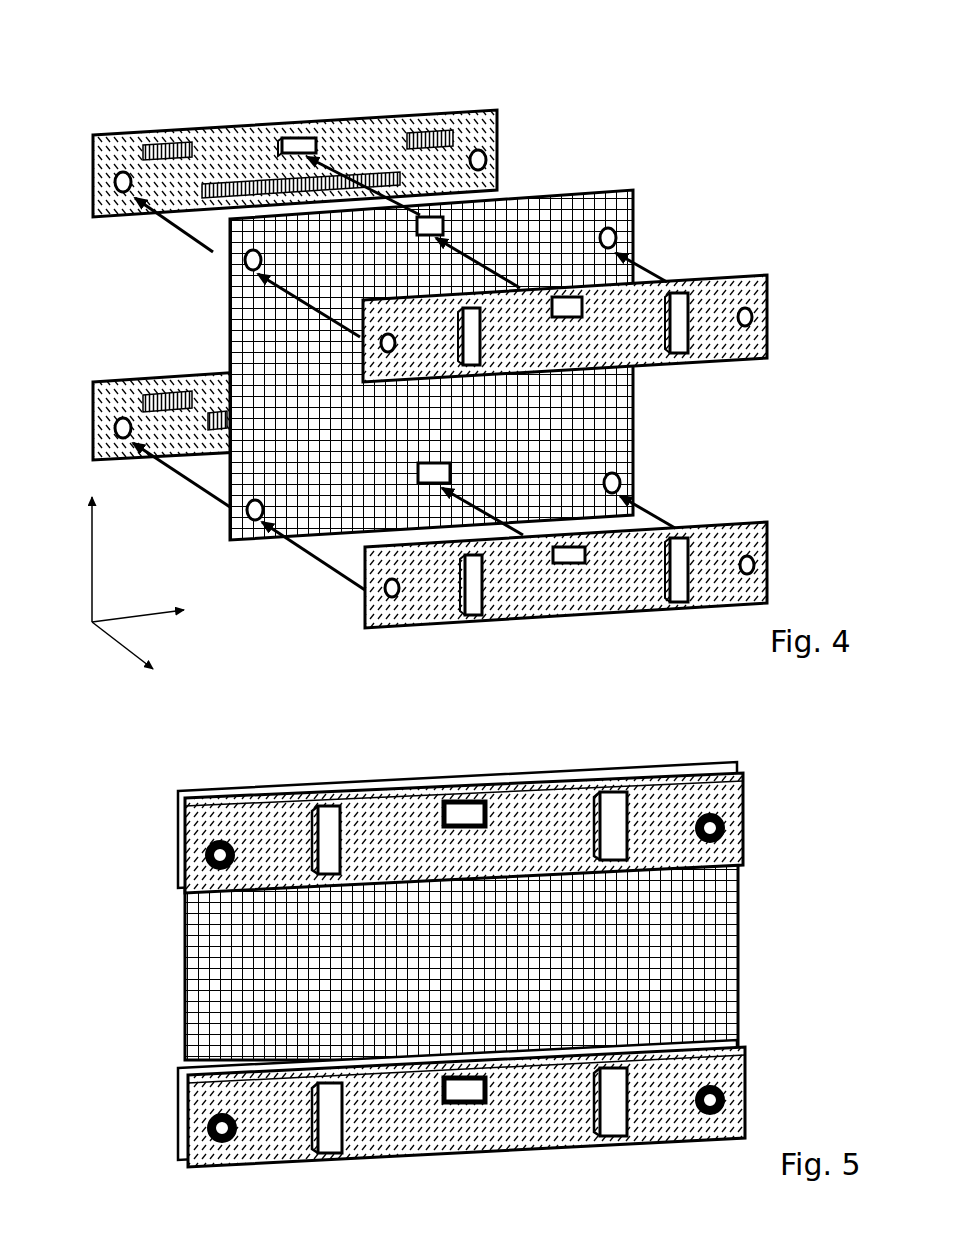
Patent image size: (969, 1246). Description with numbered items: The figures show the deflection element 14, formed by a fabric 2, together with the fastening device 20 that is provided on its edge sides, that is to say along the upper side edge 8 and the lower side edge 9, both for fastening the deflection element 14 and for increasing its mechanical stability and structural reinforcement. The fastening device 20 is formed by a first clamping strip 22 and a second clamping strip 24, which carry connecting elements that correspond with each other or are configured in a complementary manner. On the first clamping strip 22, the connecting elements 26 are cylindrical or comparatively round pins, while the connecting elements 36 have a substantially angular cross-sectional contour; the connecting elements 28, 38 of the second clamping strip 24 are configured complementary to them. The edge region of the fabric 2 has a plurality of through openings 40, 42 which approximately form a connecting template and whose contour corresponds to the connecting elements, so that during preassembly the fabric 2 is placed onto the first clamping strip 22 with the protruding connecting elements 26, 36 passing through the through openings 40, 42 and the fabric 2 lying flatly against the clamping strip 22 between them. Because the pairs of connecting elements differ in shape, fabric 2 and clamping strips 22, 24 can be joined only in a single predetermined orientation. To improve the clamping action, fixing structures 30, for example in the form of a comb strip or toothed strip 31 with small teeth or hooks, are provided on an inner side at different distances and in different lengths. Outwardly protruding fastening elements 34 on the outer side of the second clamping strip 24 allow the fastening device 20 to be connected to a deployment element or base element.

In FIG. 4, the fabric 2 is at (464, 323).
In FIG. 5, the fabric 2 is at (722, 950).
In FIG. 4, the upper side edge 8 is at (431, 338).
In FIG. 4, the lower side edge 9 is at (345, 520).
In FIG. 4, the deflection element 14 is at (270, 76).
In FIG. 5, the deflection element 14 is at (313, 734).
In FIG. 5, the fastening device 20 is at (170, 866).
In FIG. 4, the first clamping strip 22 is at (340, 277).
In FIG. 4, the second clamping strip 24 is at (609, 434).
In FIG. 5, the second clamping strip 24 is at (504, 940).
In FIG. 4, the connecting element 26 is at (121, 170).
In FIG. 4, the connecting element 28 is at (752, 318).
In FIG. 5, the connecting element 28 is at (713, 815).
In FIG. 4, the fixing structure 30 is at (165, 143).
In FIG. 4, the comb strip or toothed strip 31 is at (172, 393).
In FIG. 4, the fastening element 34 is at (683, 298).
In FIG. 5, the fastening element 34 is at (330, 806).
In FIG. 4, the connecting element 36 is at (298, 137).
In FIG. 4, the connecting element 38 is at (568, 296).
In FIG. 5, the connecting element 38 is at (470, 800).
In FIG. 4, the through opening 40 is at (609, 227).
In FIG. 4, the through opening 42 is at (428, 216).